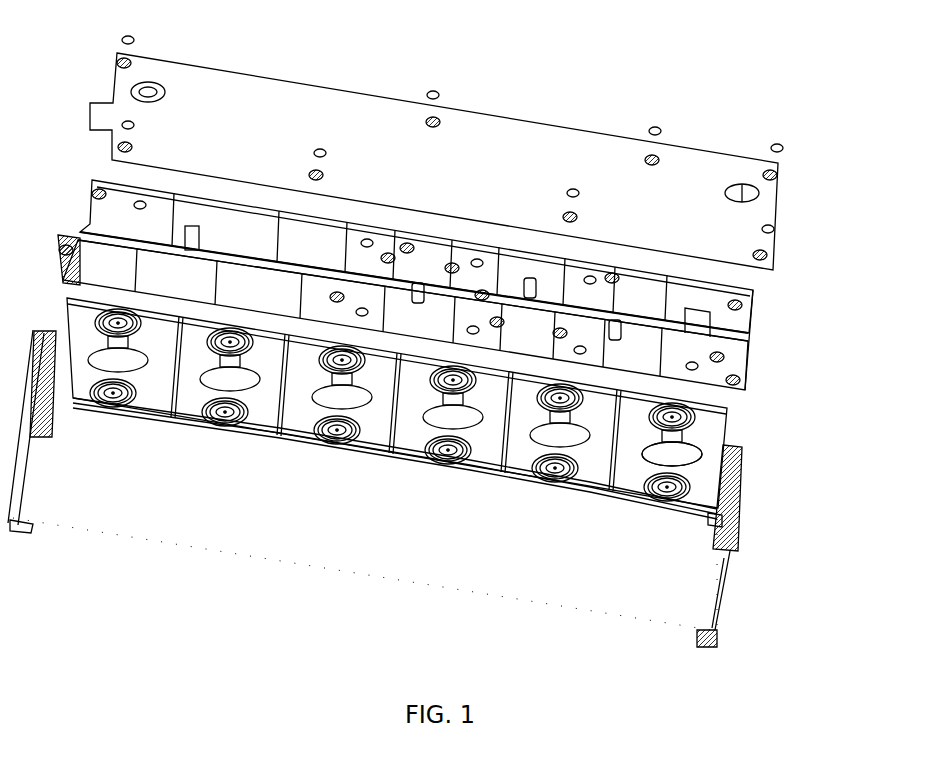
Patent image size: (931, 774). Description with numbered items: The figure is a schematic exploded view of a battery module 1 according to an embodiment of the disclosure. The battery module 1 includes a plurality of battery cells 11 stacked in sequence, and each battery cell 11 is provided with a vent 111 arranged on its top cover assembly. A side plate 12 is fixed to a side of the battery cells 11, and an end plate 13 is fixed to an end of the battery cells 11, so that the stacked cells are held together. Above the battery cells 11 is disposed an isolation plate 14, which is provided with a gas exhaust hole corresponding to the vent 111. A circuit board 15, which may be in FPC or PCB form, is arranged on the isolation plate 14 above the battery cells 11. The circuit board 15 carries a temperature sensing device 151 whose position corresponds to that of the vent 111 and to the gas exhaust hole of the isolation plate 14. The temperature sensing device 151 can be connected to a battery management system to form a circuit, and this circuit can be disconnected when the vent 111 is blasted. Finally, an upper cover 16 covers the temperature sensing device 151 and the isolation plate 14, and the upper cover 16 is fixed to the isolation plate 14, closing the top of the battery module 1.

The battery module 1 is at (627, 82).
The battery cell 11 is at (466, 408).
The vent 111 is at (703, 463).
The side plate 12 is at (567, 592).
The end plate 13 is at (730, 583).
The isolation plate 14 is at (738, 370).
The circuit board 15 is at (467, 178).
The temperature sensing device 151 is at (190, 240).
The upper cover 16 is at (492, 128).